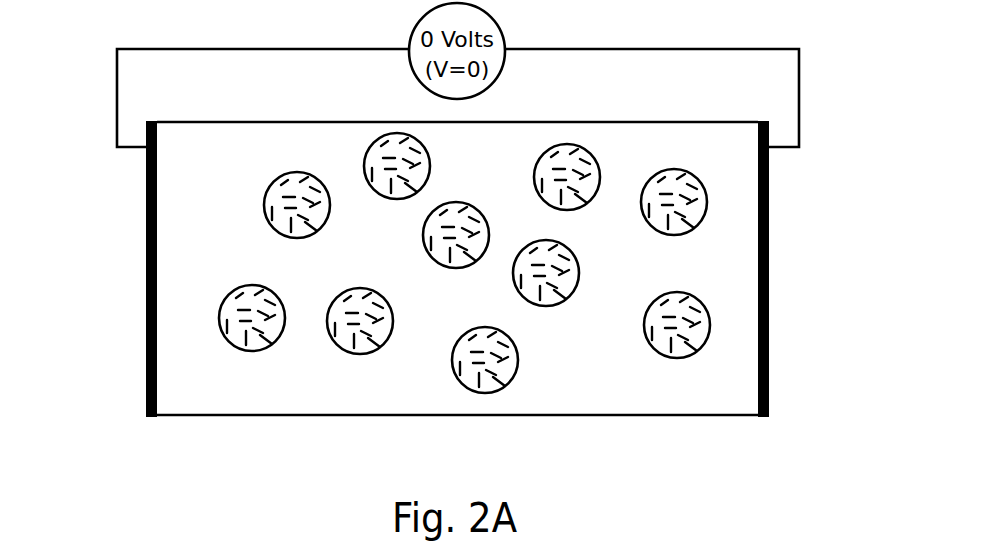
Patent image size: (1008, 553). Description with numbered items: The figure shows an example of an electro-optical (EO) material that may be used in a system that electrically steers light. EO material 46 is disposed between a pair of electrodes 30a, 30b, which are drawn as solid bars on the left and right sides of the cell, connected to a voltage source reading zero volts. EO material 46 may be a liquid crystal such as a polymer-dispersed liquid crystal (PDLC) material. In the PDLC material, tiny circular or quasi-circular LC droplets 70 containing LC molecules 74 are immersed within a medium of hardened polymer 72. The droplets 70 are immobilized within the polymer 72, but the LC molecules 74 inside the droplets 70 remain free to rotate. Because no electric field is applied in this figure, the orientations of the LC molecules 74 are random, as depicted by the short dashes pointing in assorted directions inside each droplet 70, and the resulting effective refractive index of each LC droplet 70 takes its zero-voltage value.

The electrode 30a is at (146, 221).
The electrode 30b is at (769, 244).
The EO material 46 is at (735, 417).
The LC droplets 70 is at (654, 234).
The hardened polymer 72 is at (331, 387).
The LC molecules 74 is at (262, 332).